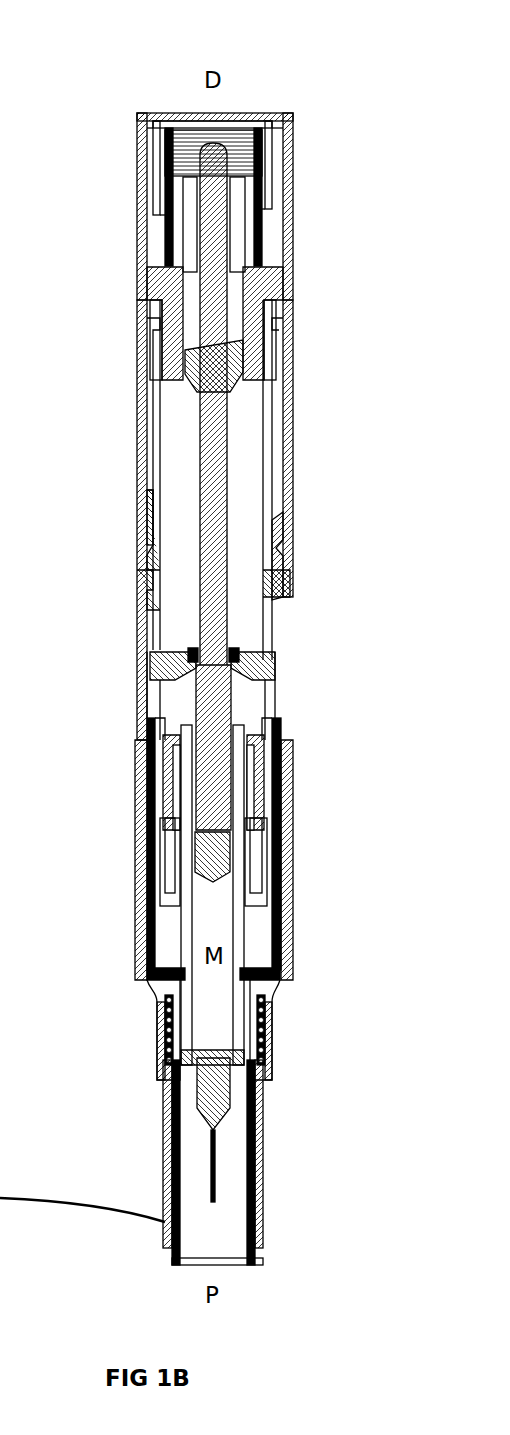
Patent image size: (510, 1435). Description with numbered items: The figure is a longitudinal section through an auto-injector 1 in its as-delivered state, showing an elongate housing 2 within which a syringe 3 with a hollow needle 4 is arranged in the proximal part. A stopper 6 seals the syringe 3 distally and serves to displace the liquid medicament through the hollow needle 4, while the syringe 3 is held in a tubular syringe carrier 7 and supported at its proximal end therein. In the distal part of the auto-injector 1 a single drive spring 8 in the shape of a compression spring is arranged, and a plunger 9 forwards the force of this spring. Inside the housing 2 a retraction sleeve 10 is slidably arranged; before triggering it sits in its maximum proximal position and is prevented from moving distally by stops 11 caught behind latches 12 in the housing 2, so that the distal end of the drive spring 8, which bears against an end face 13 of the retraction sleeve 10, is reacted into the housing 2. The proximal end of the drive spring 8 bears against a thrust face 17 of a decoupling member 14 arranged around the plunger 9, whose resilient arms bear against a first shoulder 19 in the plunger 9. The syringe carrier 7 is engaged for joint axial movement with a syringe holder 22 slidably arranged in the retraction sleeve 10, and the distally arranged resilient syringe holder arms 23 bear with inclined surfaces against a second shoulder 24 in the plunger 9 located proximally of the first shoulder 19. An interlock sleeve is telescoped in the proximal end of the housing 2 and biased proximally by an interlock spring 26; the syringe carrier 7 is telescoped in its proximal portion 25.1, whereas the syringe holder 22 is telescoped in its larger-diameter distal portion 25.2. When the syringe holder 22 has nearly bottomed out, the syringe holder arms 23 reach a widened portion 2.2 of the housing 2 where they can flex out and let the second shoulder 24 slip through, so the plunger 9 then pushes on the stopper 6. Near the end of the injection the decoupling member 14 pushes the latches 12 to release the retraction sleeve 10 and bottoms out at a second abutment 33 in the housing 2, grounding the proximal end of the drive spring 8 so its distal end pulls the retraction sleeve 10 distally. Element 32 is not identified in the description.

The auto-injector 1 is at (288, 42).
The end face 13 is at (178, 112).
The drive spring 8 is at (137, 128).
The thrust face 17 is at (162, 266).
The decoupling member 14 is at (150, 333).
The first shoulder 19 is at (276, 338).
The plunger 9 is at (196, 410).
The housing 2 is at (142, 428).
The retraction sleeve 10 is at (276, 421).
The latches 12 is at (150, 543).
The second abutment 33 is at (150, 573).
The stops 11 is at (290, 553).
The second shoulder 24 is at (190, 650).
The syringe holder arms 23 is at (170, 660).
The syringe holder 22 is at (147, 762).
The widened portion 2.2 is at (292, 786).
The syringe 3 is at (147, 874).
The stopper 6 is at (245, 856).
The distal portion 25.2 is at (147, 922).
The neck 32 is at (147, 954).
The syringe carrier 7 is at (280, 942).
The interlock spring 26 is at (160, 1010).
The proximal portion 25.1 is at (165, 1098).
The hollow needle 4 is at (225, 1148).